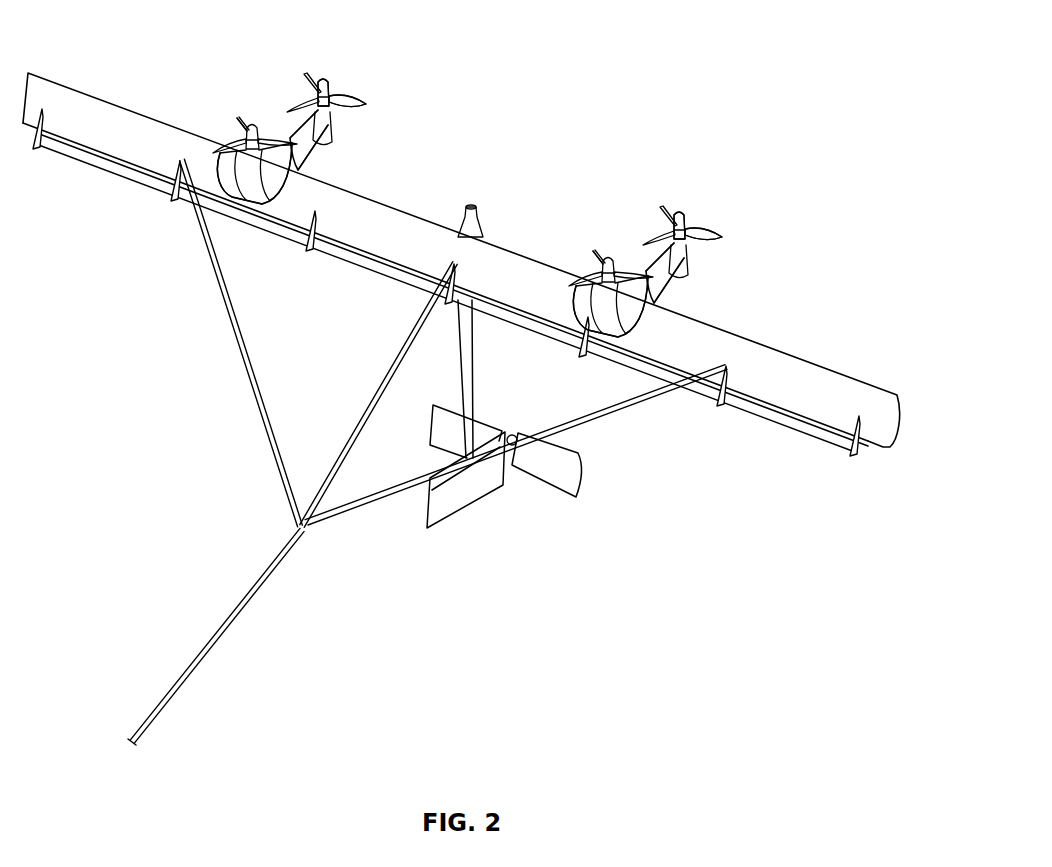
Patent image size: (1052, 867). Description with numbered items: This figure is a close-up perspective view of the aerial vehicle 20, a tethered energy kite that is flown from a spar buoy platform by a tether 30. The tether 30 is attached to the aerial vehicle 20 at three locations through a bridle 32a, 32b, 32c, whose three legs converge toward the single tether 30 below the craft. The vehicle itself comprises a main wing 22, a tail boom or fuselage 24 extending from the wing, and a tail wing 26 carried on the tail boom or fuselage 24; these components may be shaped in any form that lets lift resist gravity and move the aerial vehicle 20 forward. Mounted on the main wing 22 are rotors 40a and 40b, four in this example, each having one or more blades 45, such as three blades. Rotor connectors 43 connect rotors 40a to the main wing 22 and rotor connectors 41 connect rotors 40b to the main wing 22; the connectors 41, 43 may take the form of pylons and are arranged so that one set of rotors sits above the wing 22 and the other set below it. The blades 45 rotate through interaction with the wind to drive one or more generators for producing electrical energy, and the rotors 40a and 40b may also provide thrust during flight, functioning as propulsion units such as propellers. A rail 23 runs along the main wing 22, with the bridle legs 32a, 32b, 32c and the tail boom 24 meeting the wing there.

The aerial vehicle 20 is at (605, 143).
The main wing 22 is at (782, 372).
The rail 23 is at (78, 163).
The tail boom or fuselage 24 is at (468, 372).
The tail wing 26 is at (460, 498).
The tether 30 is at (232, 622).
The bridle 32a is at (248, 362).
The bridle 32b is at (348, 447).
The bridle 32c is at (633, 403).
The rotor 40a is at (251, 123).
The rotor 40b is at (322, 80).
The rotor connector 41 is at (248, 182).
The rotor connector 43 is at (323, 140).
The blade 45 is at (364, 104).